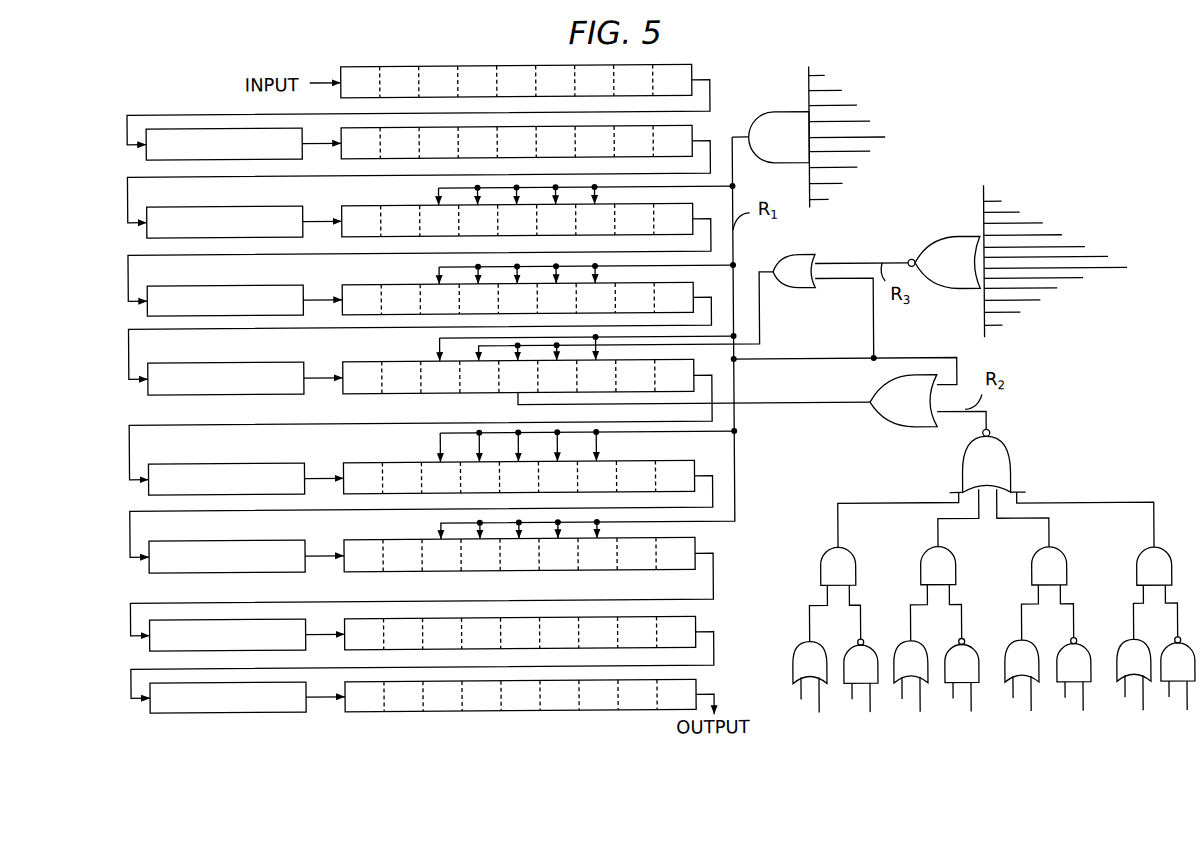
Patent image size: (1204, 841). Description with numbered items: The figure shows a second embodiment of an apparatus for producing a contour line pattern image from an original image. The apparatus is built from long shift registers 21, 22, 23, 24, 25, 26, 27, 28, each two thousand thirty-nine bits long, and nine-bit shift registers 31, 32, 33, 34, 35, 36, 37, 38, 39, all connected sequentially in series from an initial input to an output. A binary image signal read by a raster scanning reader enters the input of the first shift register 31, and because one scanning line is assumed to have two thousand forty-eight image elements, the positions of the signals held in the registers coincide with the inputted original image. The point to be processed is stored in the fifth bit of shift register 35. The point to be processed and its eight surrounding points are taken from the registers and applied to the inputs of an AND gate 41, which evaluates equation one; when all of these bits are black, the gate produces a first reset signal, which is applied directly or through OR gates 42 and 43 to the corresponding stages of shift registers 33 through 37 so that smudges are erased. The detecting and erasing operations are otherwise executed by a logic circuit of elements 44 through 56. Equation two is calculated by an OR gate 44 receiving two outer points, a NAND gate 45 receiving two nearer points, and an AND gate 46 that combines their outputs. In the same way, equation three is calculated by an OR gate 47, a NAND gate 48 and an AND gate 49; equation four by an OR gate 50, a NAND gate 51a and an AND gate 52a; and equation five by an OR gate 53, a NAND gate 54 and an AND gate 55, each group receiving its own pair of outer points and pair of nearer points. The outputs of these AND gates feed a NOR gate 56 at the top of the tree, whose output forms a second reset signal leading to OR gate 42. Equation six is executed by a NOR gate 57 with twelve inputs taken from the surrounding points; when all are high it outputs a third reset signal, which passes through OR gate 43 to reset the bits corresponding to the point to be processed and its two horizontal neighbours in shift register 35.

The 2039-bit shift register 21 is at (153, 158).
The 2039-bit shift register 22 is at (153, 236).
The 2039-bit shift register 23 is at (153, 314).
The 2039-bit shift register 24 is at (153, 393).
The 2039-bit shift register 25 is at (153, 493).
The 2039-bit shift register 26 is at (153, 571).
The 2039-bit shift register 27 is at (153, 649).
The 2039-bit shift register 28 is at (153, 711).
The 9-bit shift register 31 is at (345, 98).
The 9-bit shift register 32 is at (345, 127).
The 9-bit shift register 33 is at (349, 204).
The 9-bit shift register 34 is at (356, 283).
The 9-bit shift register 35 is at (358, 360).
The 9-bit shift register 36 is at (353, 461).
The 9-bit shift register 37 is at (357, 538).
The 9-bit shift register 38 is at (358, 617).
The 9-bit shift register 39 is at (360, 680).
The AND gate 41 is at (773, 123).
The OR gate 42 is at (883, 412).
The OR gate 43 is at (799, 262).
The OR gate 44 is at (802, 661).
The NAND gate 45 is at (853, 661).
The AND gate 46 is at (851, 571).
The OR gate 47 is at (903, 661).
The NAND gate 48 is at (955, 661).
The AND gate 49 is at (951, 571).
The OR gate 50 is at (1014, 661).
The NAND gate 51a is at (1066, 661).
The AND gate 52a is at (1062, 572).
The OR gate 53 is at (1126, 662).
The NAND gate 54 is at (1170, 662).
The AND gate 55 is at (1167, 573).
The NOR gate 56 is at (1000, 465).
The NOR gate 57 is at (945, 245).